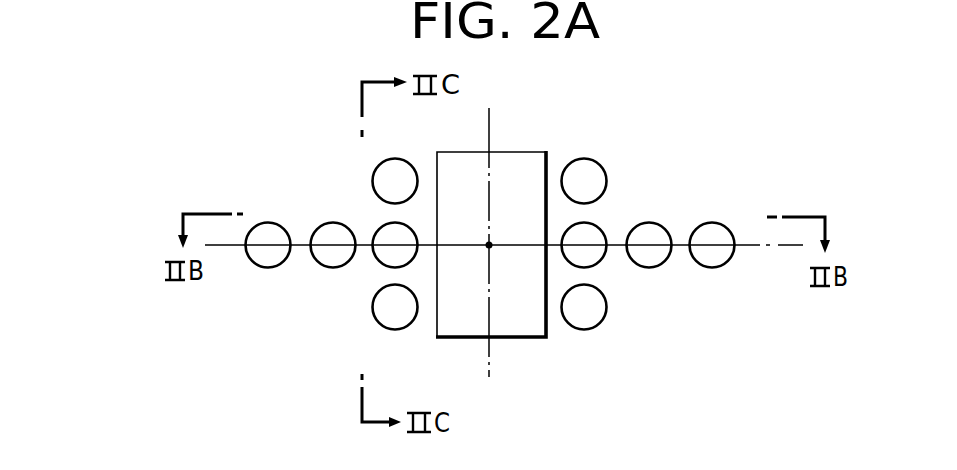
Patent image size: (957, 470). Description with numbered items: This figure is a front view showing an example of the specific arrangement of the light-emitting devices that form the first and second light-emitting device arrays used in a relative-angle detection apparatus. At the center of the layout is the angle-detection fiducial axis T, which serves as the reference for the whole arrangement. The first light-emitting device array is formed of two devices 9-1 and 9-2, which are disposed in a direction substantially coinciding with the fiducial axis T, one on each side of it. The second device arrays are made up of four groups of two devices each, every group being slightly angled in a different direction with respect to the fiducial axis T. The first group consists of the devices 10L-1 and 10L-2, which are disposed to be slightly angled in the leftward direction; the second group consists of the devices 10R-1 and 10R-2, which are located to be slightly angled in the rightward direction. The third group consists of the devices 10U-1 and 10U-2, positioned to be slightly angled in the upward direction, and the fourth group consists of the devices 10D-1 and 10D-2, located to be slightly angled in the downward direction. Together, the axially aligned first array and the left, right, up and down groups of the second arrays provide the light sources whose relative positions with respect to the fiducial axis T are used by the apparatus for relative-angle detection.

The angle-detection fiducial axis T is at (491, 248).
The light-emitting device 9-1 is at (378, 258).
The light-emitting device 9-2 is at (602, 262).
The light-emitting device 10U-1 is at (377, 168).
The light-emitting device 10D-1 is at (378, 322).
The light-emitting device 10L-1 is at (265, 221).
The light-emitting device 10L-2 is at (331, 221).
The light-emitting device 10U-2 is at (602, 170).
The light-emitting device 10D-2 is at (603, 327).
The light-emitting device 10R-1 is at (650, 223).
The light-emitting device 10R-2 is at (713, 223).